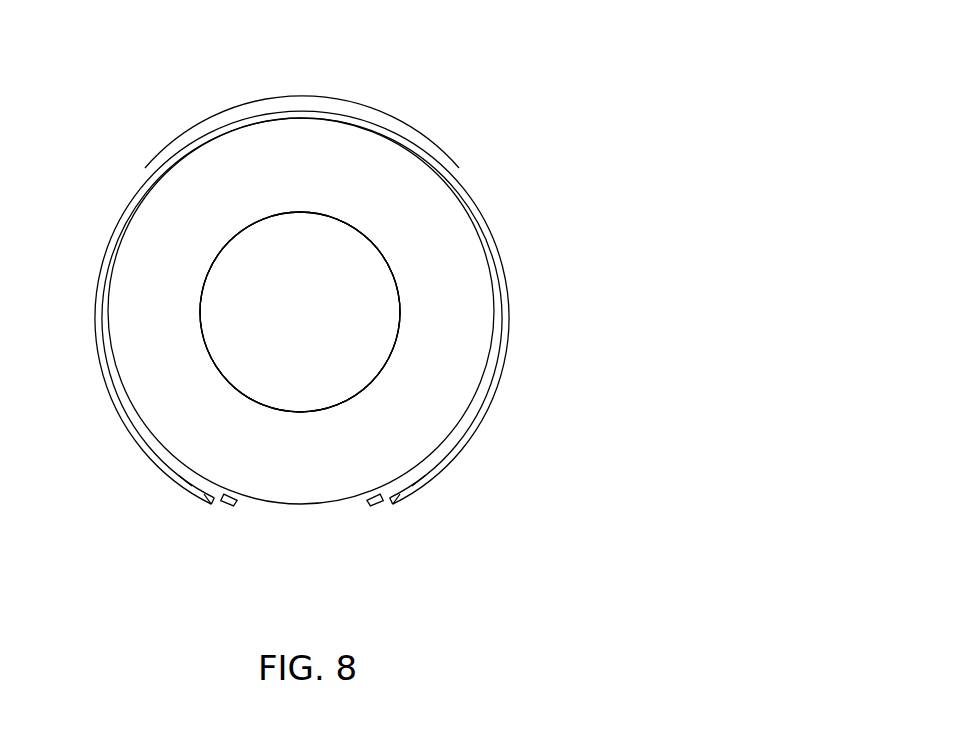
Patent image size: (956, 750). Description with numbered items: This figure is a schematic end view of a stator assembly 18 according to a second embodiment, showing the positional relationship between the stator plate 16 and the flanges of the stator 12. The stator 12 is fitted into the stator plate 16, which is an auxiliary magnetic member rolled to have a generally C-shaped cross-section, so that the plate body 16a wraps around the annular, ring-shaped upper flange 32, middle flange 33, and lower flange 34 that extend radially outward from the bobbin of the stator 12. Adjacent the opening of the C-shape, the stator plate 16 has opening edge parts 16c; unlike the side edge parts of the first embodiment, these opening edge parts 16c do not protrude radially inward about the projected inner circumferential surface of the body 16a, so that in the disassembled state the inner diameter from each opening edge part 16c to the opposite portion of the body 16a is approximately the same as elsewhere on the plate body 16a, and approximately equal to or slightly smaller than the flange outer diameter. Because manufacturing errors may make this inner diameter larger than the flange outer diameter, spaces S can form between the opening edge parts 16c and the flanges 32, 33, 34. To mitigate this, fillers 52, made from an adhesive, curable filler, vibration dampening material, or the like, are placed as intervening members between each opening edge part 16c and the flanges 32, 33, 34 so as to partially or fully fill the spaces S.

The stator assembly 18 is at (394, 110).
The stator plate 16 is at (476, 197).
The plate body 16a is at (209, 128).
The opening edge part 16c is at (204, 504).
The filler 52 is at (218, 494).
The space S is at (176, 478).
The stator 12 is at (420, 192).
The upper flange 32 is at (468, 311).
The middle flange 33 is at (444, 312).
The lower flange 34 is at (444, 312).